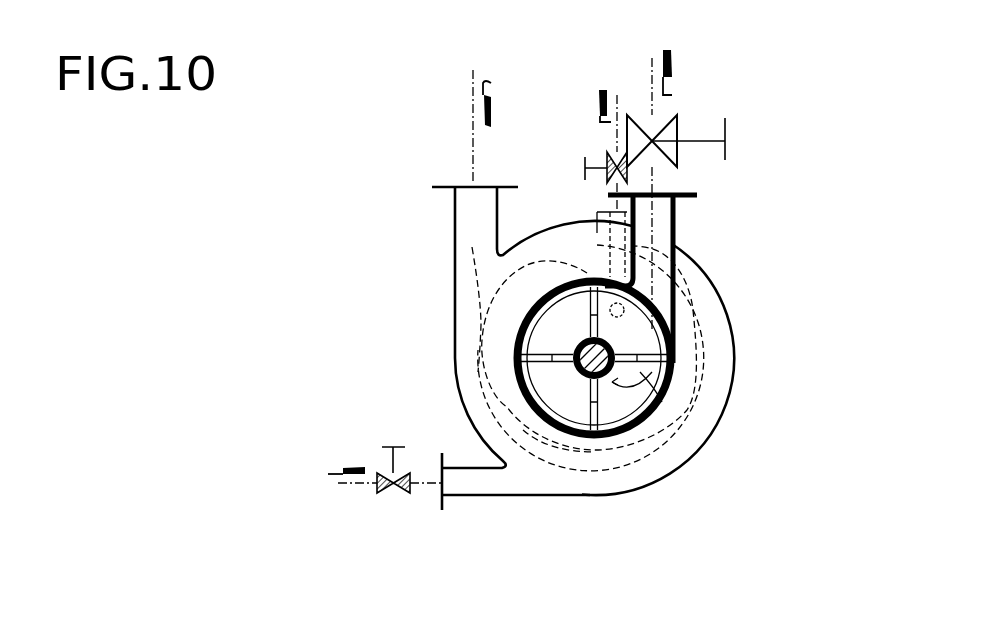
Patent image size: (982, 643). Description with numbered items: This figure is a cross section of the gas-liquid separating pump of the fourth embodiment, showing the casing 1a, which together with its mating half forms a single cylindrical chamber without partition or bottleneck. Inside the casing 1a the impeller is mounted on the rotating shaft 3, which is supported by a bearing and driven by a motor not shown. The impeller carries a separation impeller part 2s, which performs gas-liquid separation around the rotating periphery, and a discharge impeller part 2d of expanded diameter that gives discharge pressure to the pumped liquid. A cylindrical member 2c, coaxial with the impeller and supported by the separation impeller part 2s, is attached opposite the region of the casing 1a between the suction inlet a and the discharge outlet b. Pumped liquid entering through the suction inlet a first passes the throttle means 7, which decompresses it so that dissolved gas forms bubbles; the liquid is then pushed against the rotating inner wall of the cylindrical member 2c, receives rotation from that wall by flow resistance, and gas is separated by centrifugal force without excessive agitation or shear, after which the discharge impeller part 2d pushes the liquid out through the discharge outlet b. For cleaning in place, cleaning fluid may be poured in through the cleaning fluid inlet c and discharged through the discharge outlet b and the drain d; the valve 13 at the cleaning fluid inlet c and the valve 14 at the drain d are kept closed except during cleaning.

The casing 1a is at (455, 373).
The discharge outlet b is at (468, 224).
The cleaning fluid inlet c is at (618, 235).
The valve 13 is at (606, 157).
The throttle means 7 is at (701, 139).
The suction inlet a is at (658, 223).
The cylindrical member 2c is at (551, 425).
The separation impeller part 2s is at (563, 423).
The discharge impeller part 2d is at (620, 452).
The rotating shaft 3 is at (583, 377).
The drain d is at (473, 486).
The valve 14 is at (380, 461).